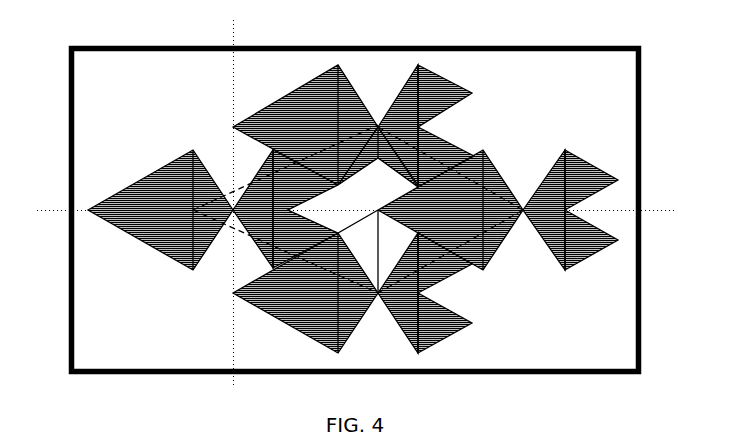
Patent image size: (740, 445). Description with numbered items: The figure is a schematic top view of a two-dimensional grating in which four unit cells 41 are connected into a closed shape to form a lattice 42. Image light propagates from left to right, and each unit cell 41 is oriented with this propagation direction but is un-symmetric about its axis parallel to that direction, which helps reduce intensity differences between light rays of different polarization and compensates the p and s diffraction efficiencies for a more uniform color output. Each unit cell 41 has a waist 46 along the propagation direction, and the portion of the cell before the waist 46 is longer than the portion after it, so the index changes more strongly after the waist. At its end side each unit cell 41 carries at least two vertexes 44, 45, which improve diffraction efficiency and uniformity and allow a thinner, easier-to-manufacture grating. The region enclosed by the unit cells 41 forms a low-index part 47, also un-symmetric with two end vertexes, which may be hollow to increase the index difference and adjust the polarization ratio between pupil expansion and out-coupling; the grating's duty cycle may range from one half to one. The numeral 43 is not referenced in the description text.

The unit cell 41 is at (318, 97).
The lattice 42 is at (472, 266).
The third diamond-shaped panel 43 is at (110, 196).
The vertex 44 is at (614, 178).
The vertex 45 is at (616, 242).
The waist 46 is at (378, 95).
The part 47 is at (257, 251).